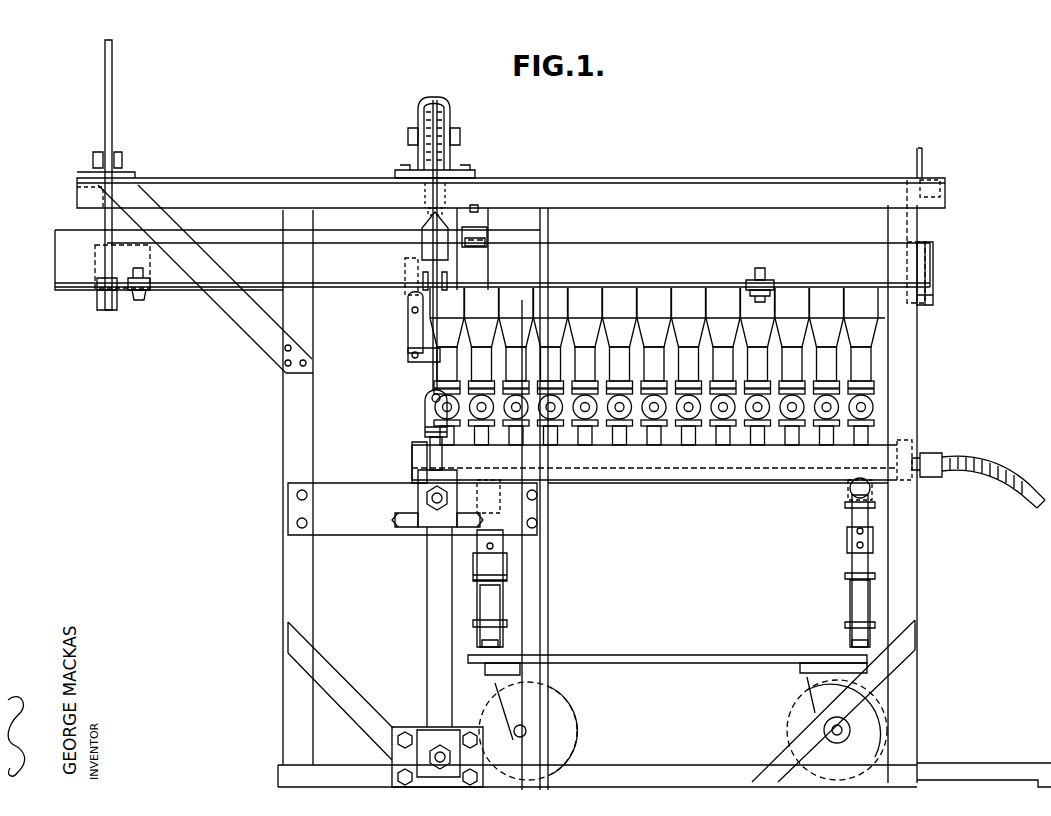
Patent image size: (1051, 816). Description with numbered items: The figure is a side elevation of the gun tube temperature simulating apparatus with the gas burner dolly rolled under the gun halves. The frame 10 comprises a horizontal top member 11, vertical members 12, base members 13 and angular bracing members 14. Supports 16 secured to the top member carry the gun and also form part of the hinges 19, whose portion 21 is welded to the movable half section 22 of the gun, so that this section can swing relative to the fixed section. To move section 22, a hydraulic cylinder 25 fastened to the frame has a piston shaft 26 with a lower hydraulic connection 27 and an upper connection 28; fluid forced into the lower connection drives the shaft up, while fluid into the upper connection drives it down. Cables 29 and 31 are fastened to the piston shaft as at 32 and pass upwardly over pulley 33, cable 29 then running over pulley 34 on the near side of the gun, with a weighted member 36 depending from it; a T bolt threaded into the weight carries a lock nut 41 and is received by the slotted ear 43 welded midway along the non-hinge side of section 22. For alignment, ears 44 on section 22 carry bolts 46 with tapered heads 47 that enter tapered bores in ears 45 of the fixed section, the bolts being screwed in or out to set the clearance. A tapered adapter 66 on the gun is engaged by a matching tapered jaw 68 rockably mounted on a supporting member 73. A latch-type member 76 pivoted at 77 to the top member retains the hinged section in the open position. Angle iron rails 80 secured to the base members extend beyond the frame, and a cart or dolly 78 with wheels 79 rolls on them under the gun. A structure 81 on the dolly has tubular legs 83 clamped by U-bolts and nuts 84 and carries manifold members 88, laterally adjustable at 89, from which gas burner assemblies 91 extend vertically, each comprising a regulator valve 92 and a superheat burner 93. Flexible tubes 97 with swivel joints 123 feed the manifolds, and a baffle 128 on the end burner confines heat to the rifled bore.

The frame 10 is at (314, 323).
The horizontal top member 11 is at (318, 186).
The vertical members 12 is at (288, 500).
The base members 13 is at (640, 765).
The angular bracing members 14 is at (348, 686).
The supports 16 is at (112, 222).
The hinges 19 is at (97, 298).
The hinge portion 21 is at (97, 310).
The half section of gun 22 is at (603, 252).
The hydraulic cylinder 25 is at (427, 603).
The piston shaft 26 is at (420, 458).
The lower hydraulic connection 27 is at (430, 757).
The upper hydraulic connection 28 is at (430, 500).
The cable 29 is at (441, 201).
The cable 31 is at (432, 197).
The cable fastening point 32 is at (425, 414).
The pulley 33 is at (446, 101).
The pulley 34 is at (430, 214).
The weighted member 36 is at (422, 245).
The lock nut 41 is at (411, 300).
The slotted ear 43 is at (425, 282).
The ears 44 is at (768, 283).
The ears 45 is at (146, 290).
The bolts 46 is at (137, 268).
The tapered heads 47 is at (140, 302).
The tapered adapter 66 is at (486, 250).
The tapered jaw 68 is at (485, 236).
The supporting member 73 is at (482, 208).
The latch-type member 76 is at (110, 52).
The pivot 77 is at (120, 164).
The cart or dolly 78 is at (112, 300).
The rollers or wheels 79 is at (577, 720).
The angle iron rails 80 is at (955, 765).
The structure 81 is at (508, 641).
The tubular legs 83 is at (490, 600).
The U-bolts and nuts 84 is at (503, 626).
The manifold members 88 is at (682, 470).
The lateral adjustment mounting 89 is at (488, 480).
The gas burner assemblies 91 is at (880, 381).
The regulator valve 92 is at (873, 404).
The burner 93 is at (590, 300).
The flexible tubes 97 is at (998, 466).
The swivel joints 123 is at (935, 456).
The baffle 128 is at (405, 263).